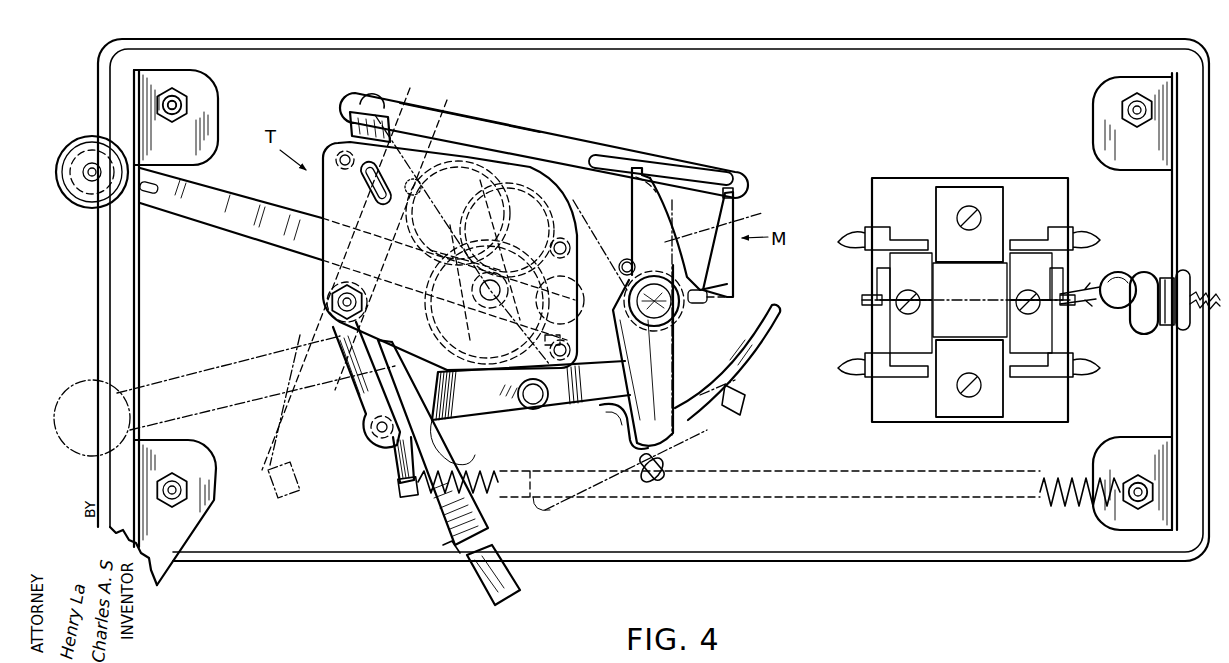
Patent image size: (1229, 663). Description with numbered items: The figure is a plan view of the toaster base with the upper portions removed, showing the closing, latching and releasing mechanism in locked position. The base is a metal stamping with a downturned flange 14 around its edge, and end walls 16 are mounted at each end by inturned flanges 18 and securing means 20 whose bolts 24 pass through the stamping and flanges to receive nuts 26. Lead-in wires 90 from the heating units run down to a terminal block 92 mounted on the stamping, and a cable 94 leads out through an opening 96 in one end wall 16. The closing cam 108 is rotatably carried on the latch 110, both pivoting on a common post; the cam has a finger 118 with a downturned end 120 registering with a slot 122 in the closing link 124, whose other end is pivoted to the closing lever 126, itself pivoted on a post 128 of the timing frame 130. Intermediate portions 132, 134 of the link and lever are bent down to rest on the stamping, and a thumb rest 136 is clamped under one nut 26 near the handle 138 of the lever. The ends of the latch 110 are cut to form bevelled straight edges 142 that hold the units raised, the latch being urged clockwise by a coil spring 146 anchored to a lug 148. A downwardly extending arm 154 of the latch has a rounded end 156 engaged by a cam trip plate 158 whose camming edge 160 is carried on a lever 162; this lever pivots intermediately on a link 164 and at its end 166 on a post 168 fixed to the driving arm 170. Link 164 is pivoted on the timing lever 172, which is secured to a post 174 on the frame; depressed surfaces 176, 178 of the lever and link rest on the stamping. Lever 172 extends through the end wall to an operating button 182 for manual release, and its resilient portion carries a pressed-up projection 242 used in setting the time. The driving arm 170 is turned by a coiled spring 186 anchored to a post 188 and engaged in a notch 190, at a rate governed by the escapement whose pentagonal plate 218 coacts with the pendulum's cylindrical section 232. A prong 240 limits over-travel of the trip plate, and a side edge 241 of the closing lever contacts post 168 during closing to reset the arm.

The downturned flange 14 is at (1012, 560).
The walls 16 is at (132, 281).
The inturned flange 18 is at (180, 70).
The securing means 20 is at (193, 95).
The bolts 24 is at (172, 96).
The nuts 26 is at (168, 94).
The lead-in wires 90 is at (840, 246).
The terminal block 92 is at (918, 412).
The cable 94 is at (1143, 334).
The opening 96 is at (1168, 278).
The closing cam 108 is at (640, 206).
The latch 110 is at (729, 317).
The finger 118 is at (720, 258).
The downturned end 120 is at (724, 188).
The slot 122 is at (676, 172).
The closing link 124 is at (544, 129).
The closing lever 126 is at (352, 133).
The post 128 is at (333, 300).
The frame 130 is at (322, 197).
The intermediate portion 132 is at (493, 132).
The intermediate portion 134 is at (445, 501).
The thumb rest 136 is at (160, 552).
The handle 138 is at (497, 578).
The bevelled straight edges 142 is at (649, 177).
The coil spring 146 is at (695, 305).
The lug 148 is at (730, 297).
The downwardly extending arm 154 is at (658, 433).
The rounded end 156 is at (650, 441).
The cam trip plate 158 is at (705, 398).
The camming edge 160 is at (735, 372).
The lever 162 is at (570, 420).
The link 164 is at (562, 340).
The end 166 is at (396, 442).
The post 168 is at (380, 430).
The driving arm 170 is at (356, 378).
The timing lever 172 is at (246, 218).
The post 174 is at (566, 308).
The depressed surface 176 is at (498, 406).
The depressed surface 178 is at (492, 378).
The operating button 182 is at (84, 148).
The coiled spring 186 is at (1062, 496).
The post 188 is at (1138, 502).
The notch 190 is at (401, 489).
The pentagonal plate 218 is at (400, 234).
The cylindrical section 232 is at (344, 265).
The prong 240 is at (668, 478).
The side edge 241 is at (442, 517).
The pressed-up projection 242 is at (150, 198).